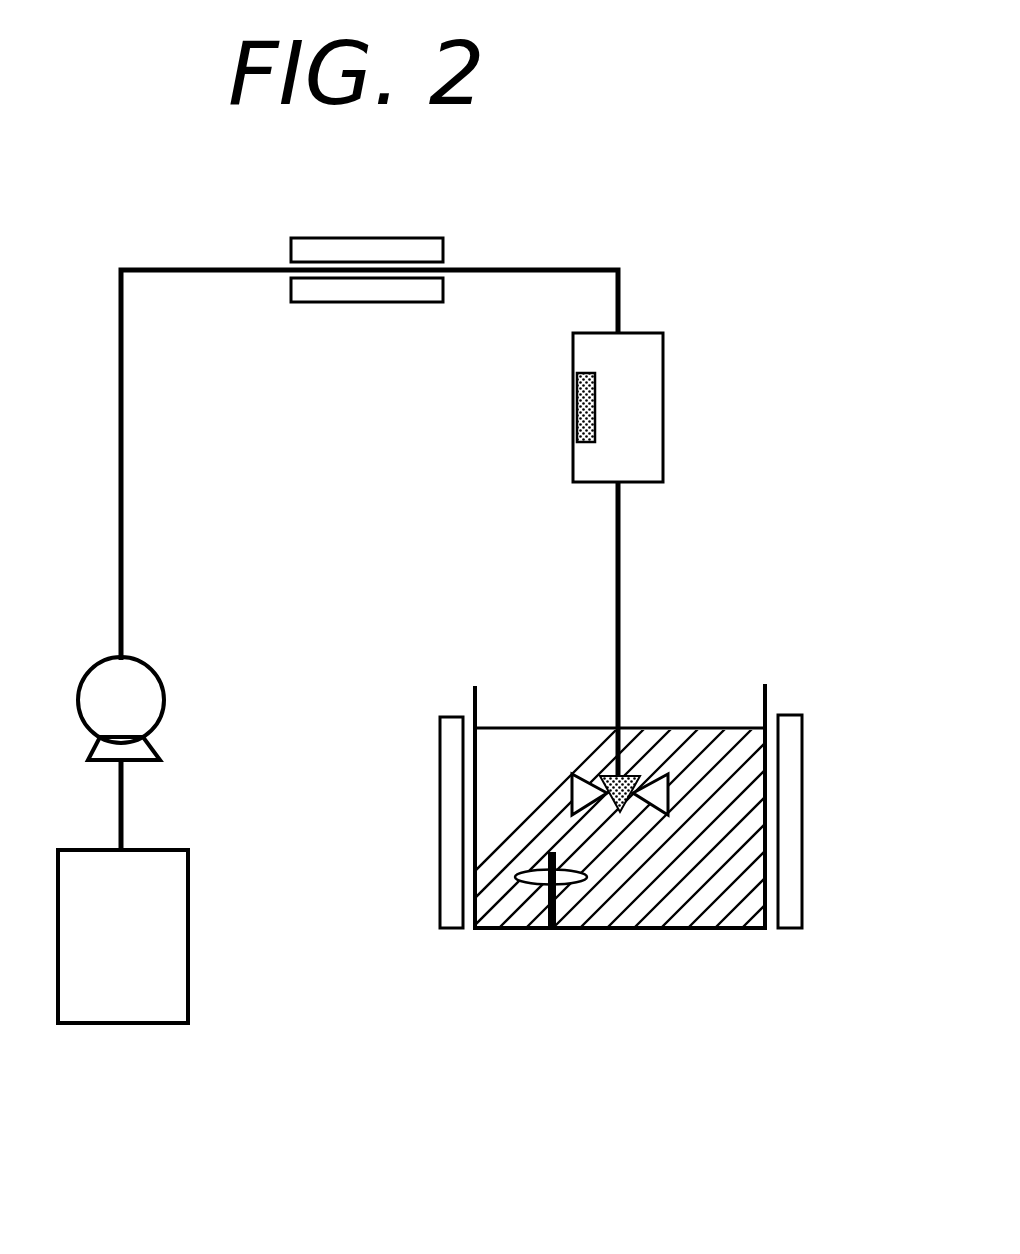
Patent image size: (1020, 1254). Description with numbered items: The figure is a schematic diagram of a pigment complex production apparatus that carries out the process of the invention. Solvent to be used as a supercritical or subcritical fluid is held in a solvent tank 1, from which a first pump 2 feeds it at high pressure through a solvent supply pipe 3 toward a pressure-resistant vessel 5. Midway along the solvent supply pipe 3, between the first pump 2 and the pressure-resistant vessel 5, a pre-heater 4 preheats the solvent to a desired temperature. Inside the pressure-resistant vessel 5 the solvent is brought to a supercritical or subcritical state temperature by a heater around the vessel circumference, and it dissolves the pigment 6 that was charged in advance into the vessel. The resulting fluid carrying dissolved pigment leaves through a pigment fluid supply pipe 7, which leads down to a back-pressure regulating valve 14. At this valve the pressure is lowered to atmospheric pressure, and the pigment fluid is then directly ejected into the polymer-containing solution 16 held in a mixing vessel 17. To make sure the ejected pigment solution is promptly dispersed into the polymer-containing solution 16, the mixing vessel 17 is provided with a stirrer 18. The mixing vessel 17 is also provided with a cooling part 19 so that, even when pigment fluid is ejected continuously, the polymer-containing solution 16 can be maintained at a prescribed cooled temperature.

The solvent tank 1 is at (122, 997).
The first pump 2 is at (100, 683).
The solvent supply pipe 3 is at (168, 268).
The pre-heater 4 is at (395, 238).
The pressure-resistant vessel 5 is at (642, 370).
The pigment 6 is at (575, 398).
The pigment fluid supply pipe 7 is at (622, 565).
The back-pressure regulating valve 14 is at (573, 797).
The polymer-containing solution 16 is at (698, 900).
The mixing vessel 17 is at (768, 703).
The stirrer 18 is at (578, 884).
The cooling part 19 is at (790, 813).